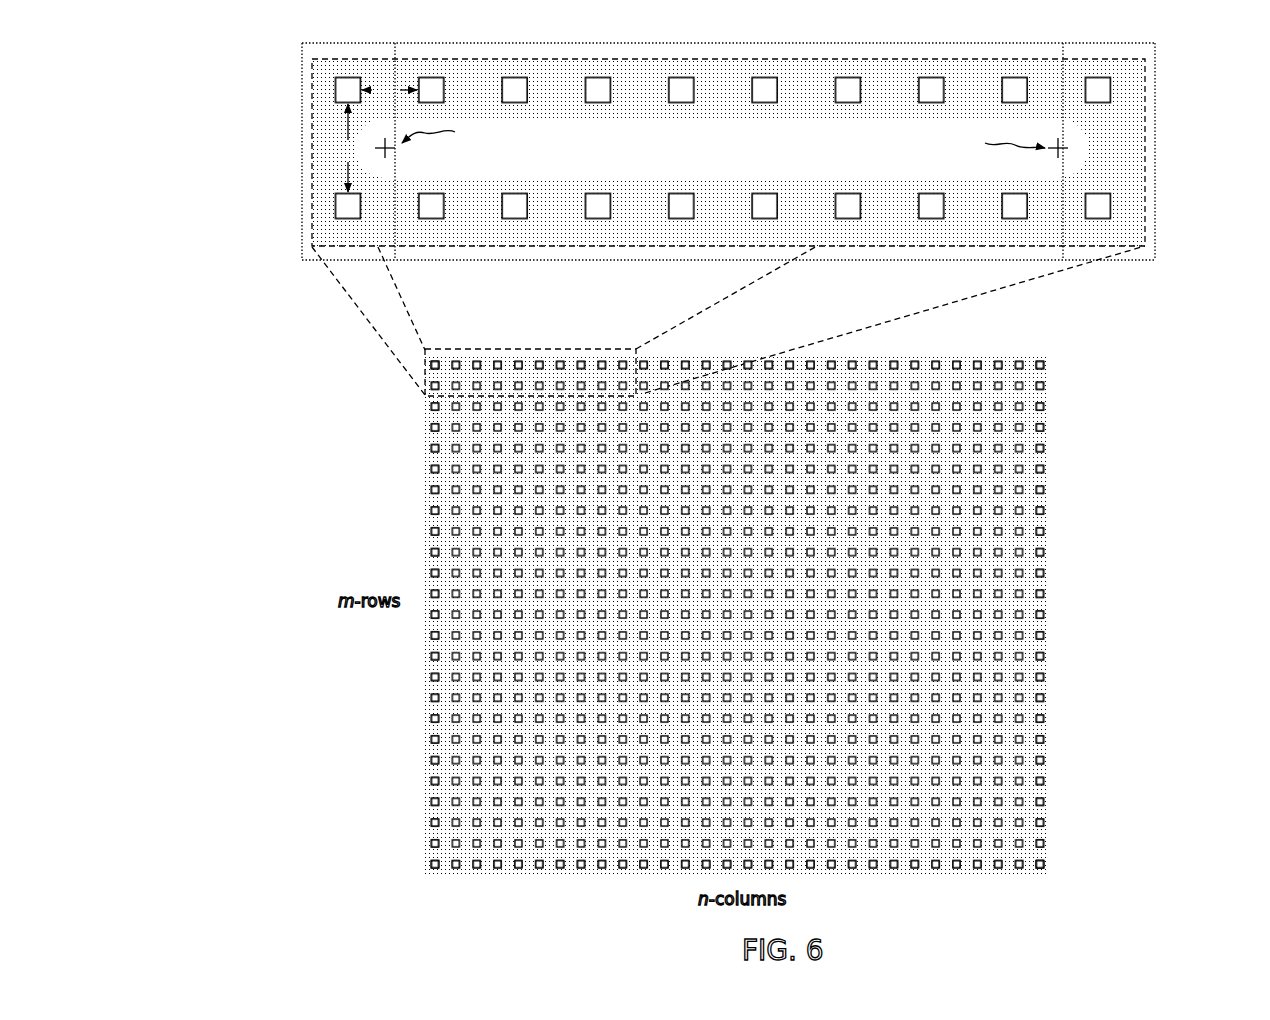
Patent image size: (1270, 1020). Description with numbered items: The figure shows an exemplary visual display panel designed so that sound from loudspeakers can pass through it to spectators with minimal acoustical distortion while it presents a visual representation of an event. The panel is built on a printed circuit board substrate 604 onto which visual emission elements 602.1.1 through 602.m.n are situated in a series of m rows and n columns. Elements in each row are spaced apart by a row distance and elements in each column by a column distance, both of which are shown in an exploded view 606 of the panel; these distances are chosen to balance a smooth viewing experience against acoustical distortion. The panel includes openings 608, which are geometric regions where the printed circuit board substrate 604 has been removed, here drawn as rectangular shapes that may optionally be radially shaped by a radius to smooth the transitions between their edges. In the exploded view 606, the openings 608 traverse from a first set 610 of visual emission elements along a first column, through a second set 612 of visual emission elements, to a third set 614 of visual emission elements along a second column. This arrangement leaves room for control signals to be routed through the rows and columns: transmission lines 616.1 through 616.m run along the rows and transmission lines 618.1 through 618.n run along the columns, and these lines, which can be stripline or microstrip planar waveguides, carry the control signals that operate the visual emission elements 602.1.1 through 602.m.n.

The exploded view 606 is at (701, 192).
The first set of visual emission elements 610 is at (302, 73).
The third set of visual emission elements 614 is at (1155, 147).
The openings 608 is at (741, 157).
The second set of visual emission elements 612 is at (523, 258).
The printed circuit board substrate 604 is at (743, 579).
The transmission line 618.1 is at (433, 350).
The transmission line 618.n is at (1040, 352).
The transmission line 616.1 is at (1050, 362).
The transmission line 616.m is at (1050, 858).
The visual emission element 602.1.1 is at (425, 364).
The visual emission element 602.m.n is at (1042, 865).